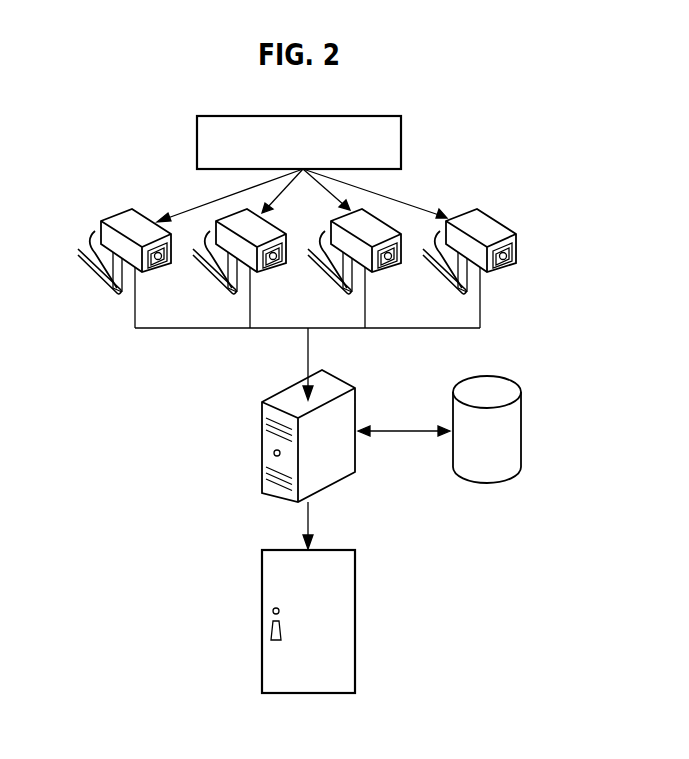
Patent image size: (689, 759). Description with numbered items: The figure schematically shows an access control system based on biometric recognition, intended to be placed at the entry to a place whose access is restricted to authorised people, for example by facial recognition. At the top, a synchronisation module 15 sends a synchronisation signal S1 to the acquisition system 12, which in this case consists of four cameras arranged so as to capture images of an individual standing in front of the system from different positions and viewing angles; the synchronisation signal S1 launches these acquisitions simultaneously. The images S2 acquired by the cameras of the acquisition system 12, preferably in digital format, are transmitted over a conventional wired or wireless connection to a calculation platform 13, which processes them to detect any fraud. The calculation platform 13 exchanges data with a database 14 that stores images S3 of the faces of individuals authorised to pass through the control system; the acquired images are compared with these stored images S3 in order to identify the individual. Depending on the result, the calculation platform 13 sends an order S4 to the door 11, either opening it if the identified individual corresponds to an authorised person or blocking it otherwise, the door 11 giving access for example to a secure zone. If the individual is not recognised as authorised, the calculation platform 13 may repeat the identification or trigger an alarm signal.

The synchronisation module 15 is at (313, 152).
The acquisition system 12 is at (160, 273).
The calculation platform 13 is at (338, 446).
The database 14 is at (500, 446).
The door 11 is at (321, 627).
The synchronisation signal S1 is at (413, 205).
The images S2 is at (308, 360).
The images S3 is at (402, 430).
The order S4 is at (308, 518).